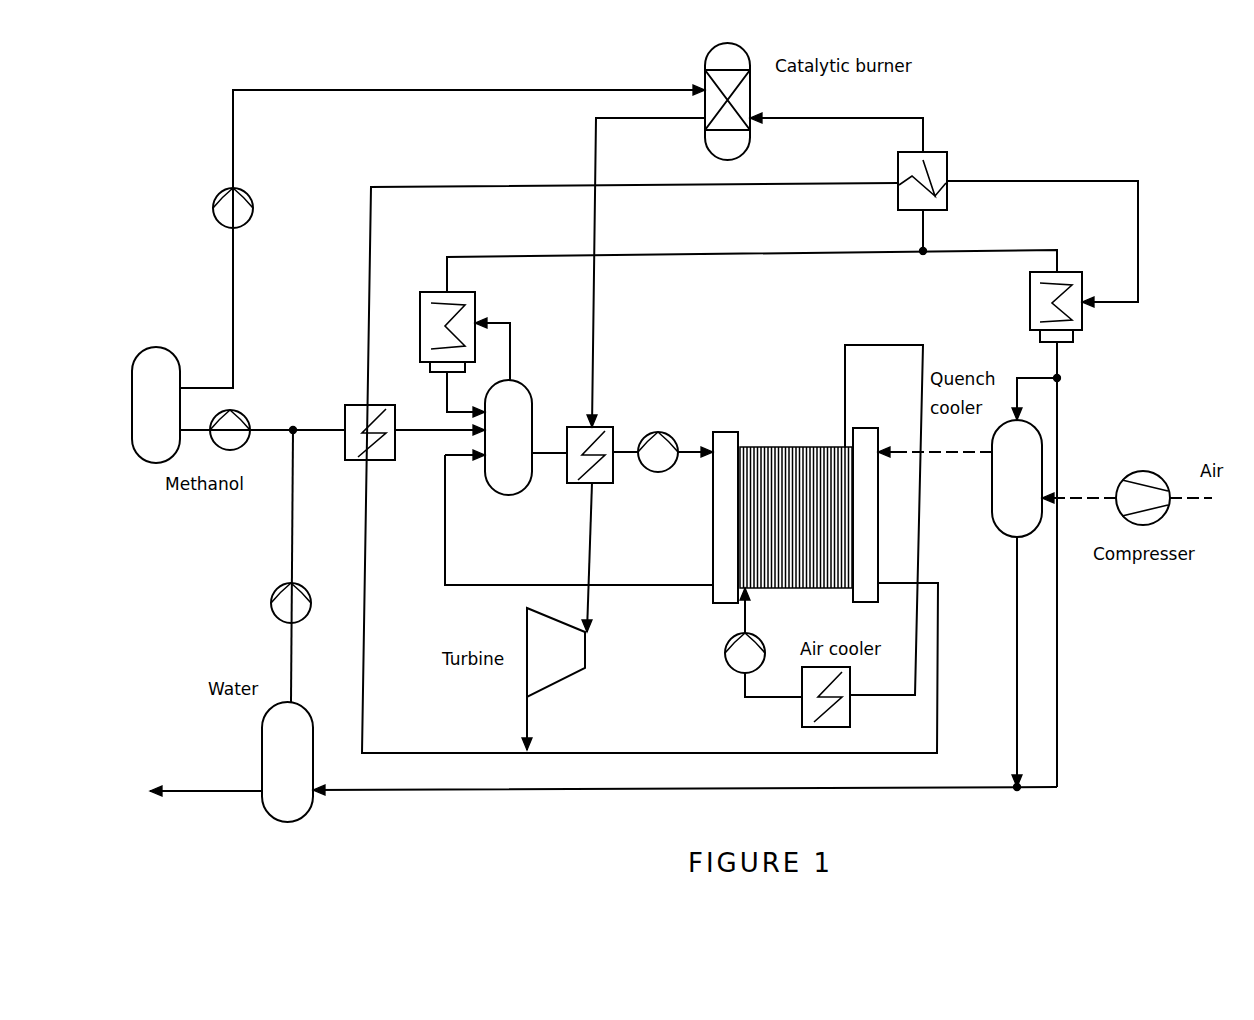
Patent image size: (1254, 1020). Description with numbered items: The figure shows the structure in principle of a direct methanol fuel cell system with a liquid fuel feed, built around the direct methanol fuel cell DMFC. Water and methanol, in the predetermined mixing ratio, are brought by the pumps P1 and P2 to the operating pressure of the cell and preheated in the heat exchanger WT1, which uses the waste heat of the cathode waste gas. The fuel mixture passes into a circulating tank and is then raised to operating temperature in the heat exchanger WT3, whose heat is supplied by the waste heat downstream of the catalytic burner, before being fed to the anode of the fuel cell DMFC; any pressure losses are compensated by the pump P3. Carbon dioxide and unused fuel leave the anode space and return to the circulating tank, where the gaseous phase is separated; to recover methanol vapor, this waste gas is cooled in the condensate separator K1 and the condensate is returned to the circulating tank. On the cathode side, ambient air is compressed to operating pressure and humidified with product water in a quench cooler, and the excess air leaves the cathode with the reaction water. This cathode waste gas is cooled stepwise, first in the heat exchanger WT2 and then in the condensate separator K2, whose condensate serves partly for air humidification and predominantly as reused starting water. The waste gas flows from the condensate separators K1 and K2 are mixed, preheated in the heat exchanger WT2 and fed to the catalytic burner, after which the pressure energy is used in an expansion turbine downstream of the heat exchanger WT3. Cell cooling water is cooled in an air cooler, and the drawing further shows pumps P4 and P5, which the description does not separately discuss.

The pump P1 is at (240, 425).
The pump P2 is at (306, 608).
The pump P3 is at (658, 474).
The cathode circulation pump P4 is at (724, 630).
The methanol pump to catalytic burner P5 is at (247, 208).
The condensate separator K1 is at (437, 292).
The condensate separator K2 is at (1107, 331).
The heat exchanger WT1 is at (326, 372).
The heat exchanger WT2 is at (1020, 194).
The heat exchanger WT3 is at (676, 435).
The direct methanol fuel cell DMFC is at (795, 514).